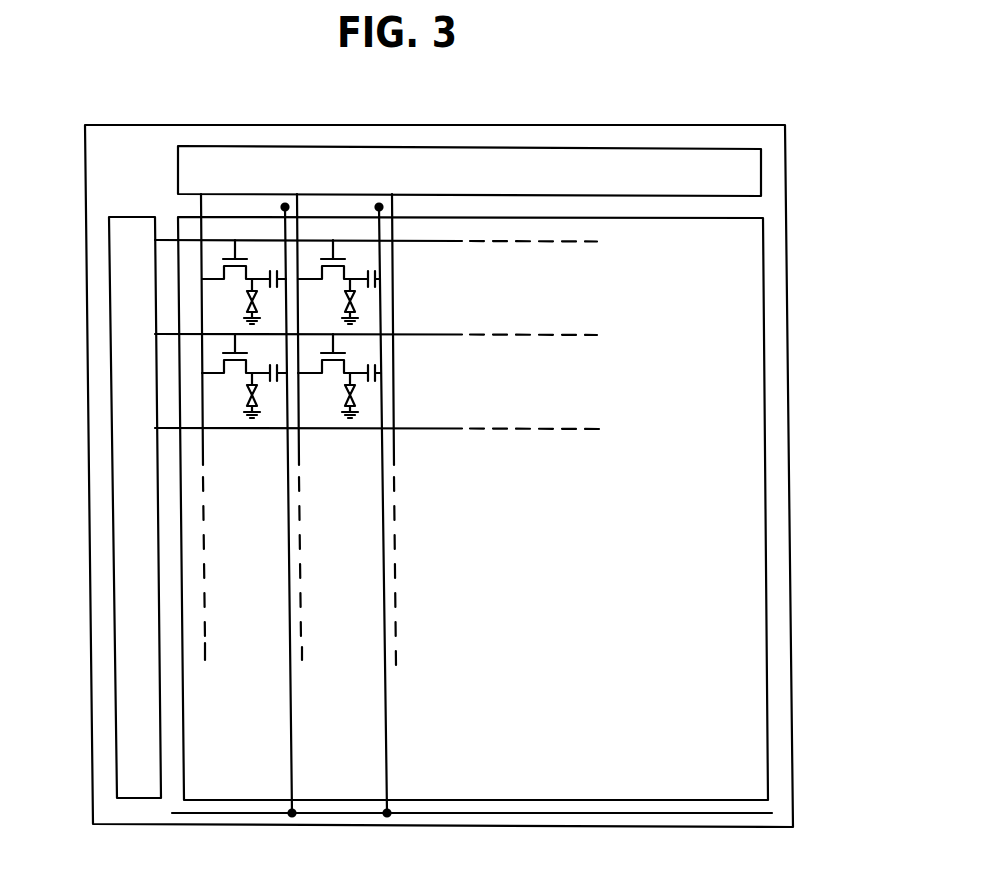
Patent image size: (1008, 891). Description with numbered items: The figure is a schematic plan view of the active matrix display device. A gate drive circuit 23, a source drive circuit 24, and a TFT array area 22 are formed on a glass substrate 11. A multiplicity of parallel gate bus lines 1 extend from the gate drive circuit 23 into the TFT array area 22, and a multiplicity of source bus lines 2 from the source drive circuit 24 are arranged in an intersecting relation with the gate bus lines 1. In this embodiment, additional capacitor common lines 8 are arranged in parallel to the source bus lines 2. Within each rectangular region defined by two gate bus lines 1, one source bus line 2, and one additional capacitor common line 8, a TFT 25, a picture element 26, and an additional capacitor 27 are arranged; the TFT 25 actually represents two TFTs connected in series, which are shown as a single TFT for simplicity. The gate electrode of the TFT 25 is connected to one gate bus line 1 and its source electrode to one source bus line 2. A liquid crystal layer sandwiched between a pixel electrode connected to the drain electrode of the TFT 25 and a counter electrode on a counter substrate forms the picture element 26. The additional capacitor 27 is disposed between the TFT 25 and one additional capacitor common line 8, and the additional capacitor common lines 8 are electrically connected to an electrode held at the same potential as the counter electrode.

The glass substrate 11 is at (723, 124).
The source drive circuit 24 is at (750, 175).
The TFT array area 22 is at (765, 268).
The gate drive circuit 23 is at (117, 363).
The gate bus line 1 is at (588, 242).
The additional capacitor common line 8 is at (290, 591).
The source bus line 2 is at (300, 649).
The TFT 25 is at (347, 360).
The picture element 26 is at (340, 402).
The additional capacitor 27 is at (370, 383).